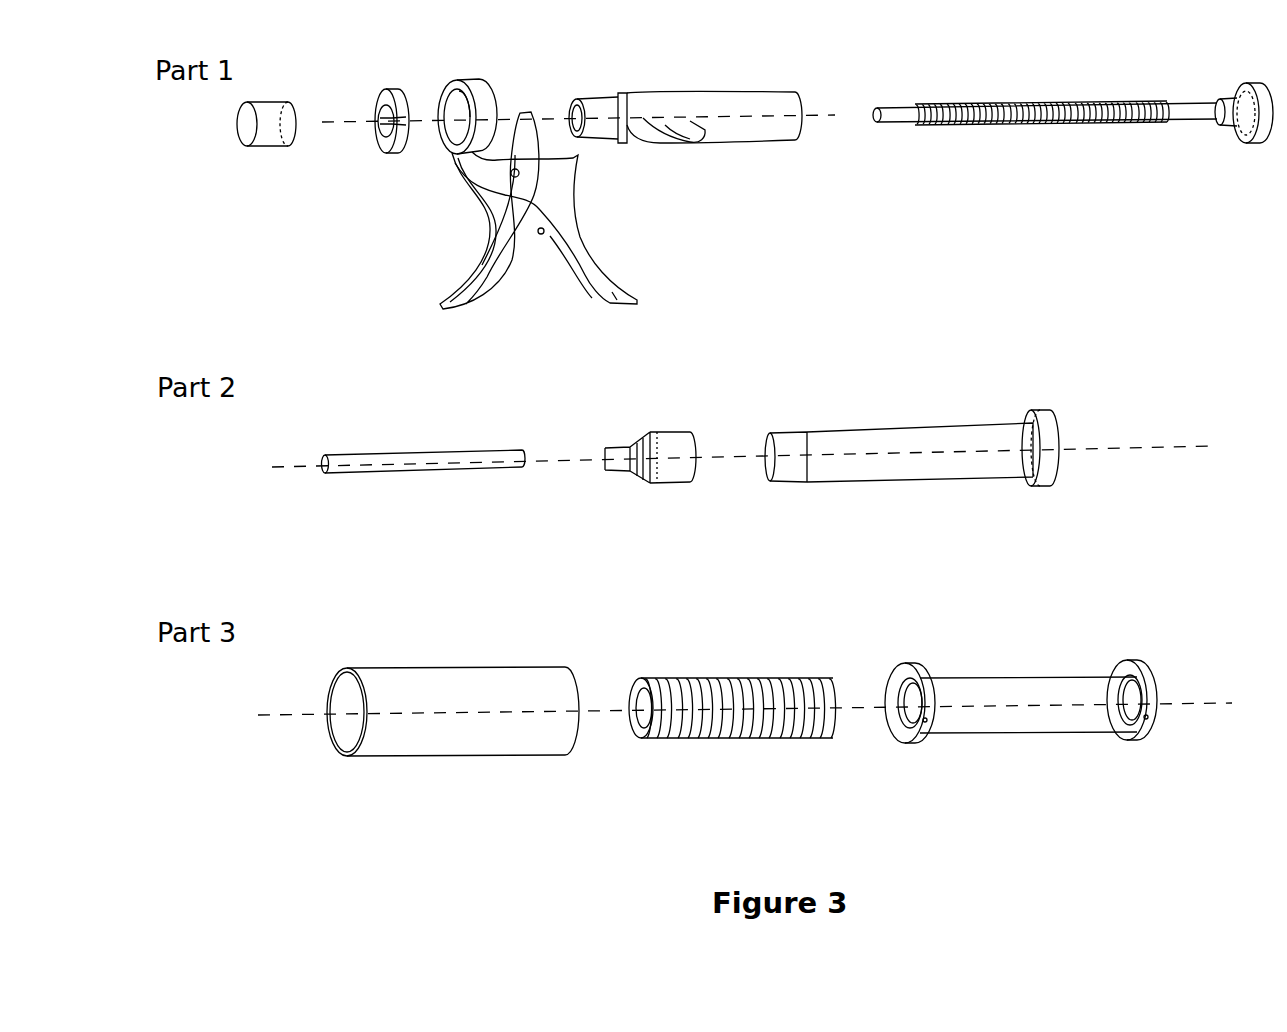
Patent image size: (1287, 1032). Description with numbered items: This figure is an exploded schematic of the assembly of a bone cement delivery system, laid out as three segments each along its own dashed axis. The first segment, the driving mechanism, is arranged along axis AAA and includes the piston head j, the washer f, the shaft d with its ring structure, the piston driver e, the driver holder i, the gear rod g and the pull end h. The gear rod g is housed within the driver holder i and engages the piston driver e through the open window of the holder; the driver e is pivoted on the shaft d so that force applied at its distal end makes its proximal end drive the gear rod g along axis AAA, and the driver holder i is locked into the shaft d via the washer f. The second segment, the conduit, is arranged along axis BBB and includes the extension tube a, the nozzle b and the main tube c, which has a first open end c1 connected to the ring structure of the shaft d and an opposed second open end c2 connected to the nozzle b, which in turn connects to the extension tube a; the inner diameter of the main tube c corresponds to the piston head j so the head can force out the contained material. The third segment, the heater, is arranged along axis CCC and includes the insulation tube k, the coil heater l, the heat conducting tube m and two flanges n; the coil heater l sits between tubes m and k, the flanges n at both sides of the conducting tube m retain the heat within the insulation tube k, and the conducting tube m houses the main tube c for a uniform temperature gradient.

The extension tube a is at (408, 470).
The nozzle b is at (654, 478).
The main tube c is at (920, 478).
The first open end c1 is at (1056, 480).
The second open end c2 is at (790, 491).
The shaft d is at (602, 308).
The piston driver e is at (493, 288).
The washer f is at (403, 150).
The gear rod g is at (1032, 124).
The pull end h is at (1235, 118).
The driver holder i is at (735, 128).
The piston head j is at (274, 148).
The insulation tube k is at (407, 746).
The coil heater l is at (700, 740).
The heat conducting tube m is at (1023, 726).
The flanges n is at (923, 736).
The axis AAA is at (832, 108).
The axis of part 2 BBB is at (1206, 446).
The axis of part 3 CCC is at (1230, 703).